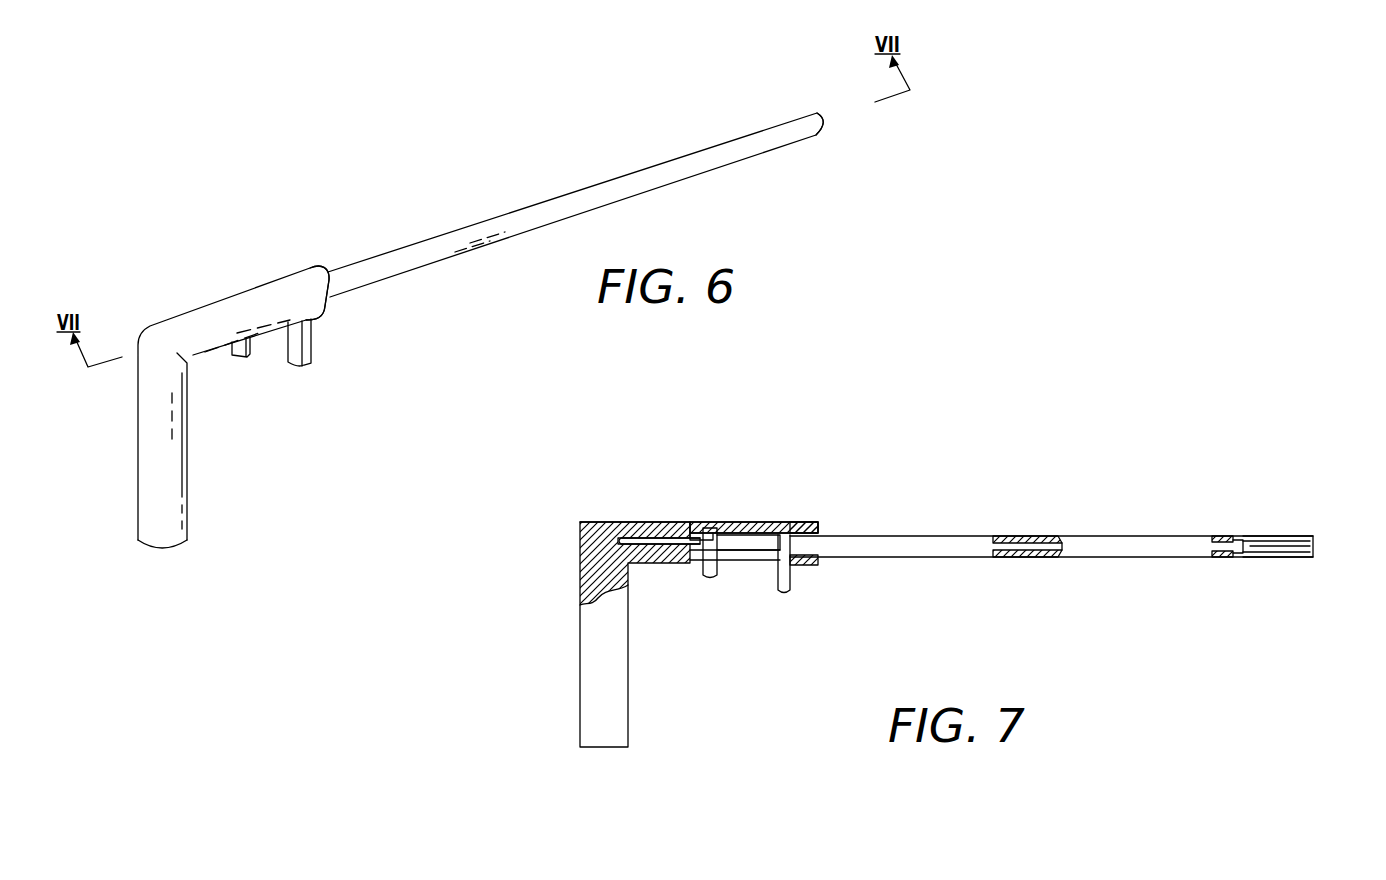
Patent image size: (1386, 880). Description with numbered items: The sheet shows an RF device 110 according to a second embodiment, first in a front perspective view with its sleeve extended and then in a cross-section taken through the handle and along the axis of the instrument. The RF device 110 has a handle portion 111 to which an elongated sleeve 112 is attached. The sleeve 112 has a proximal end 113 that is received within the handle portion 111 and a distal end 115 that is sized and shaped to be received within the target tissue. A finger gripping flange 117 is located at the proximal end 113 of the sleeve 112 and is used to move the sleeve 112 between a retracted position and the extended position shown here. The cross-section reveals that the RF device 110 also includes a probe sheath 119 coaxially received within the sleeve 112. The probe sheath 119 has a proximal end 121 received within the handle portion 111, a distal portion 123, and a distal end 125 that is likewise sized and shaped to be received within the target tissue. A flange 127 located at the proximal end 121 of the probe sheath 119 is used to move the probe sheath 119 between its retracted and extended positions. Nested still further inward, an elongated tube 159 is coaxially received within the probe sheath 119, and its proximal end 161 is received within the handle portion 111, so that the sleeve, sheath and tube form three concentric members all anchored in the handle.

In FIG. 6, the RF device 110 is at (447, 150).
In FIG. 7, the RF device 110 is at (1070, 476).
In FIG. 6, the handle portion 111 is at (157, 317).
In FIG. 7, the handle portion 111 is at (613, 522).
In FIG. 6, the elongated sleeve 112 is at (531, 206).
In FIG. 7, the elongated sleeve 112 is at (885, 537).
In FIG. 6, the proximal end 113 is at (328, 272).
In FIG. 7, the proximal end 113 is at (805, 538).
In FIG. 6, the distal end 115 is at (822, 117).
In FIG. 6, the finger gripping flange 117 is at (311, 345).
In FIG. 7, the finger gripping flange 117 is at (788, 583).
In FIG. 7, the probe sheath 119 is at (1022, 537).
In FIG. 7, the proximal end 121 is at (723, 542).
In FIG. 7, the distal portion 123 is at (1257, 535).
In FIG. 7, the distal end 125 is at (1317, 537).
In FIG. 6, the flange 127 is at (250, 356).
In FIG. 7, the flange 127 is at (712, 567).
In FIG. 7, the elongated tube 159 is at (667, 528).
In FIG. 7, the proximal end 161 is at (637, 543).